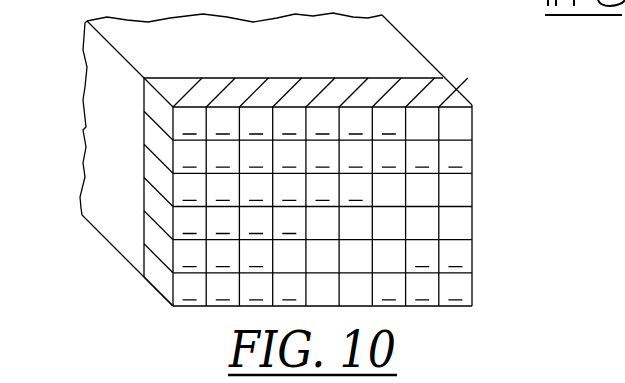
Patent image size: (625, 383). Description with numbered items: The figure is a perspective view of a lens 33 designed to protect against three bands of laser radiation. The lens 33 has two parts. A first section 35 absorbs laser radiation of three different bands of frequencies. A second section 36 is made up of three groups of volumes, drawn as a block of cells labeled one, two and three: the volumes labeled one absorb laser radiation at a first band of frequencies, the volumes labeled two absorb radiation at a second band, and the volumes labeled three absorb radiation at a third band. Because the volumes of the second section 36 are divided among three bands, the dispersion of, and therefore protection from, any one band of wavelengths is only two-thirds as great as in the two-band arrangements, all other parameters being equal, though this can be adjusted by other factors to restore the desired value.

The lens 33 is at (80, 127).
The first section 35 is at (410, 42).
The second section 36 is at (458, 86).